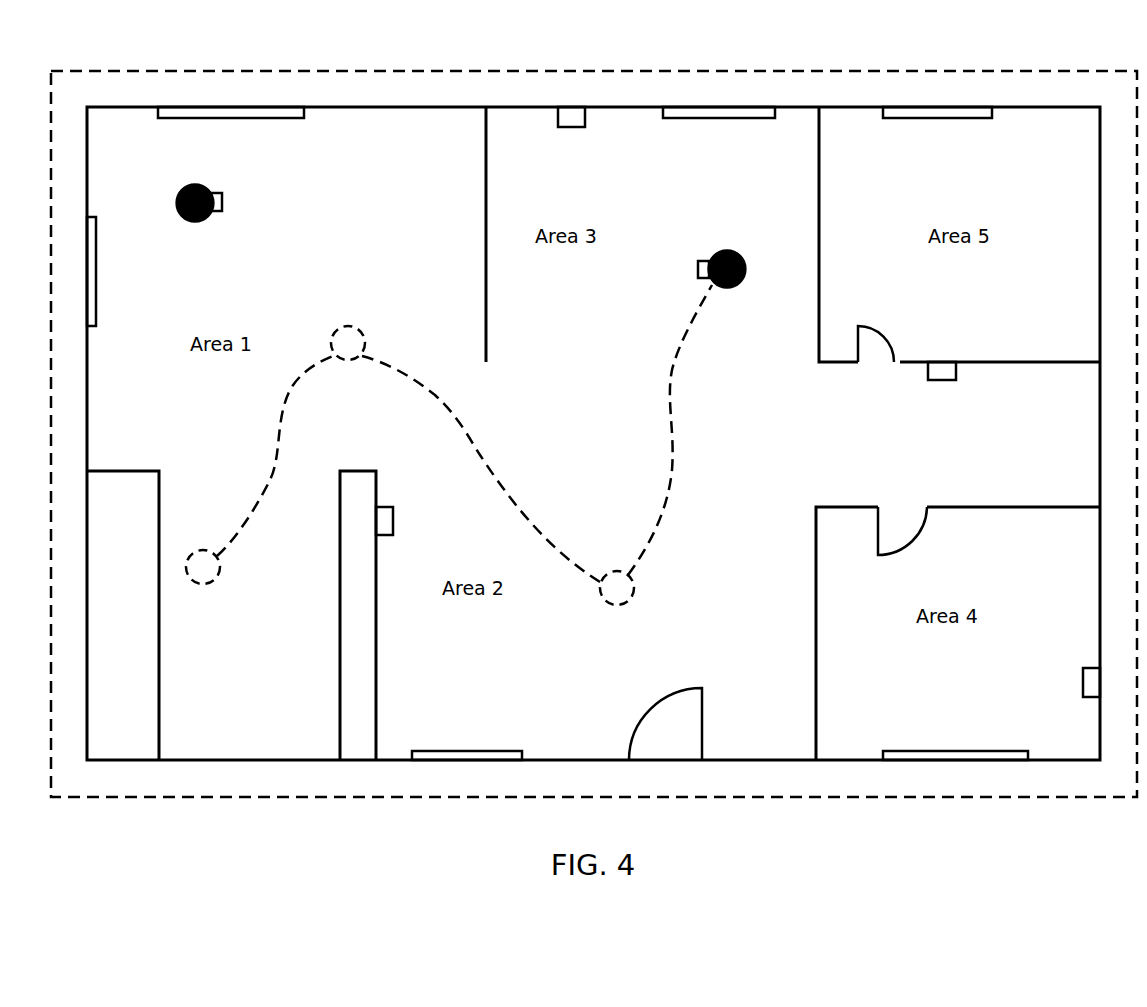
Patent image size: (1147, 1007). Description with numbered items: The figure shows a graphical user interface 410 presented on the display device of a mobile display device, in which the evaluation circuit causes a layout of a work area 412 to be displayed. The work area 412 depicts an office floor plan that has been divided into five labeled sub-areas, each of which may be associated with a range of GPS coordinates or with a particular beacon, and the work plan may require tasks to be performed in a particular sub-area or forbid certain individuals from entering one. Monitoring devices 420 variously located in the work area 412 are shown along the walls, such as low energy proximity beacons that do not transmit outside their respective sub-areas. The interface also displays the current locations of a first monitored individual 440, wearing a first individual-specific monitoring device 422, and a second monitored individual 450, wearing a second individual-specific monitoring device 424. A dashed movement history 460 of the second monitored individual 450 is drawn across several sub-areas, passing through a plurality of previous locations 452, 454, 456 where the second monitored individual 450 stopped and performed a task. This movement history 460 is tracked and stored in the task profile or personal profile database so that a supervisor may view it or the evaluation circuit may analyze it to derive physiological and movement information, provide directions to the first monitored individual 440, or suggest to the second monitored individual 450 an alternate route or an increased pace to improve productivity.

The graphical user interface 410 is at (862, 70).
The work area 412 is at (640, 103).
The monitoring devices 420 is at (566, 128).
The first individual-specific monitoring device 422 is at (224, 203).
The second individual-specific monitoring device 424 is at (697, 270).
The first monitored individual 440 is at (192, 183).
The second monitored individual 450 is at (728, 250).
The previous location 452 is at (205, 550).
The previous location 454 is at (348, 326).
The previous location 456 is at (619, 571).
The movement history 460 is at (470, 438).